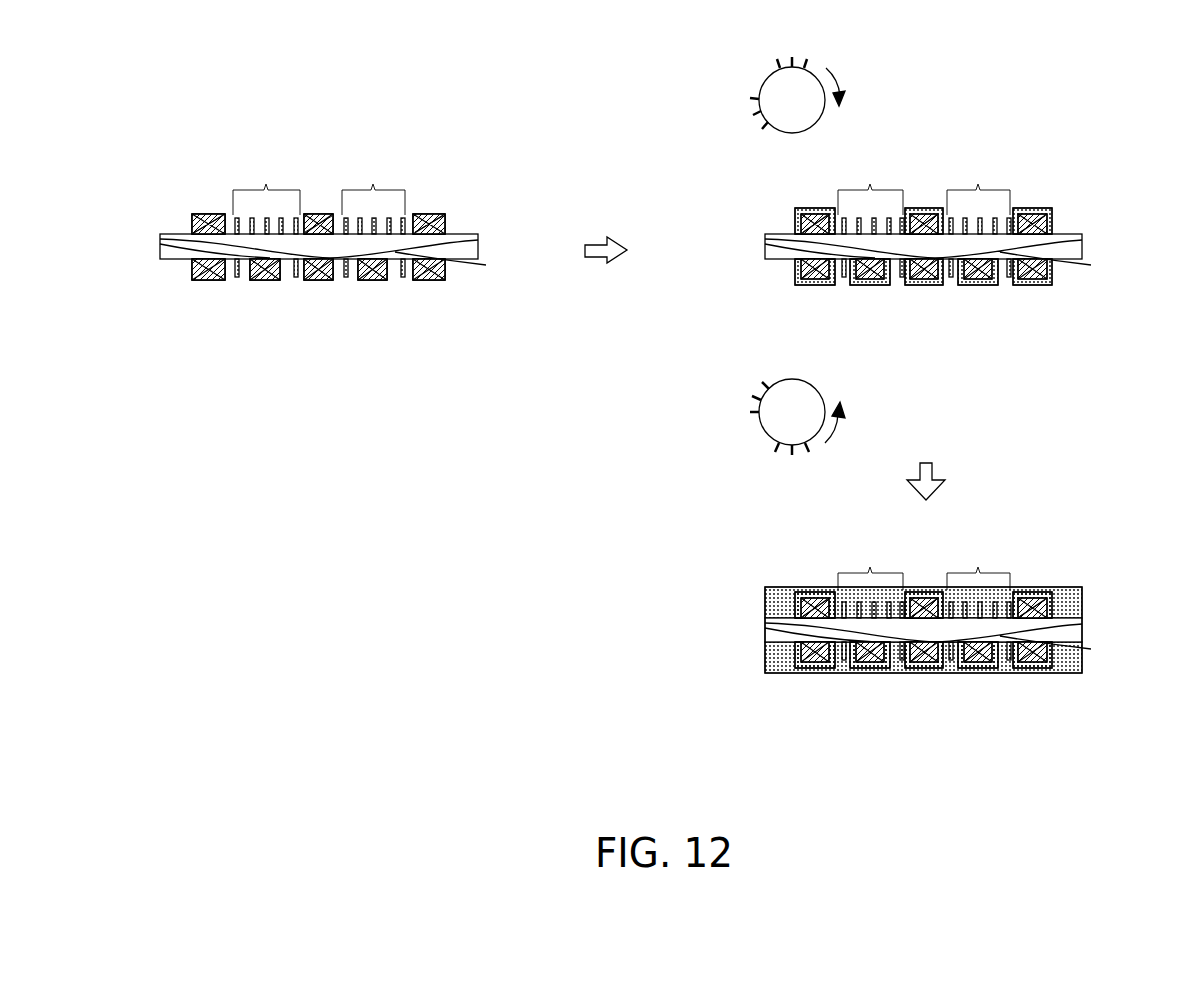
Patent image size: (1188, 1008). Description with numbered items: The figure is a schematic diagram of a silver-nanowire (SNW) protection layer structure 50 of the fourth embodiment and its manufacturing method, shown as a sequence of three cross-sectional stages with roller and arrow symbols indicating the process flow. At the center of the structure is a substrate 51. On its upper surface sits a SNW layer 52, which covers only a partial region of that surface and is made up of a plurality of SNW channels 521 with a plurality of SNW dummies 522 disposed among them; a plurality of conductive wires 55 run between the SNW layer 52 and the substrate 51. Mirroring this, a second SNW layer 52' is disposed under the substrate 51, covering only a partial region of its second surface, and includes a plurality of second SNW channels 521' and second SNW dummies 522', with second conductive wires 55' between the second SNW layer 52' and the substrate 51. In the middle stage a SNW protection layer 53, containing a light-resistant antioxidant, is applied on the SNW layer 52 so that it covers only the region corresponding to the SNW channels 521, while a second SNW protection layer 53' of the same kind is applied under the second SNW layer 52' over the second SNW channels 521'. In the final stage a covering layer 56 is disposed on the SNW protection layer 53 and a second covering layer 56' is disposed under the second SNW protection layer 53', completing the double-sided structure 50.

The SNW protection layer structure 50 is at (638, 511).
The substrate 51 is at (172, 260).
The SNW layer 52 is at (656, 385).
The second SNW layer 52' is at (657, 488).
The SNW channels 521 is at (621, 385).
The second SNW channels 521' is at (623, 503).
The SNW dummies 522 is at (622, 385).
The second SNW dummies 522' is at (612, 488).
The SNW protection layer 53 is at (979, 385).
The second SNW protection layer 53' is at (892, 488).
The conductive wires 55 is at (631, 386).
The second conductive wires 55' is at (621, 441).
The covering layer 56 is at (882, 576).
The second covering layer 56' is at (882, 680).